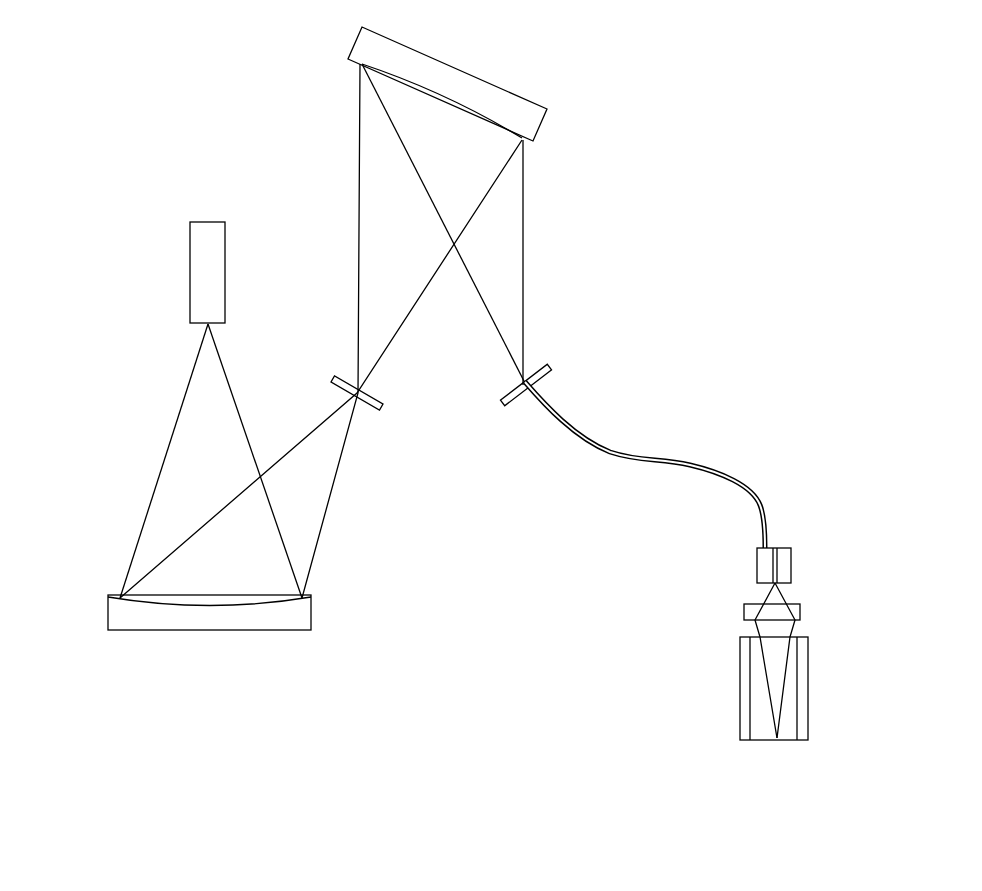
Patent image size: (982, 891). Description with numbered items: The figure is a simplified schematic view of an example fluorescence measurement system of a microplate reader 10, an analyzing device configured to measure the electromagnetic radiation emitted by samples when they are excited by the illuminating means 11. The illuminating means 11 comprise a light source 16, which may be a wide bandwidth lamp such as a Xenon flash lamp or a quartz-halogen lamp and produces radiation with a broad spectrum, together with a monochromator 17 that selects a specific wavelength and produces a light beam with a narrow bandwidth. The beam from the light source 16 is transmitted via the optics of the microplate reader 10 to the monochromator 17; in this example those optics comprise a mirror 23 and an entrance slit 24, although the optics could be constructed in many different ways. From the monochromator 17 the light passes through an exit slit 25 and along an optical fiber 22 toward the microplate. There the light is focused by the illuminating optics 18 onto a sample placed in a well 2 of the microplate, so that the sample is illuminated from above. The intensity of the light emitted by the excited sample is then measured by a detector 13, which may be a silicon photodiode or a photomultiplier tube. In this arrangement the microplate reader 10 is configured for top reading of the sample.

The microplate reader 10 is at (748, 313).
The illuminating means 11 is at (125, 188).
The light source 16 is at (190, 267).
The monochromator 17 is at (538, 128).
The mirror 23 is at (311, 612).
The entrance slit 24 is at (377, 402).
The exit slit 25 is at (547, 366).
The optical fiber 22 is at (690, 465).
The detector 13 is at (792, 563).
The illuminating optics 18 is at (743, 613).
The well 2 is at (808, 673).